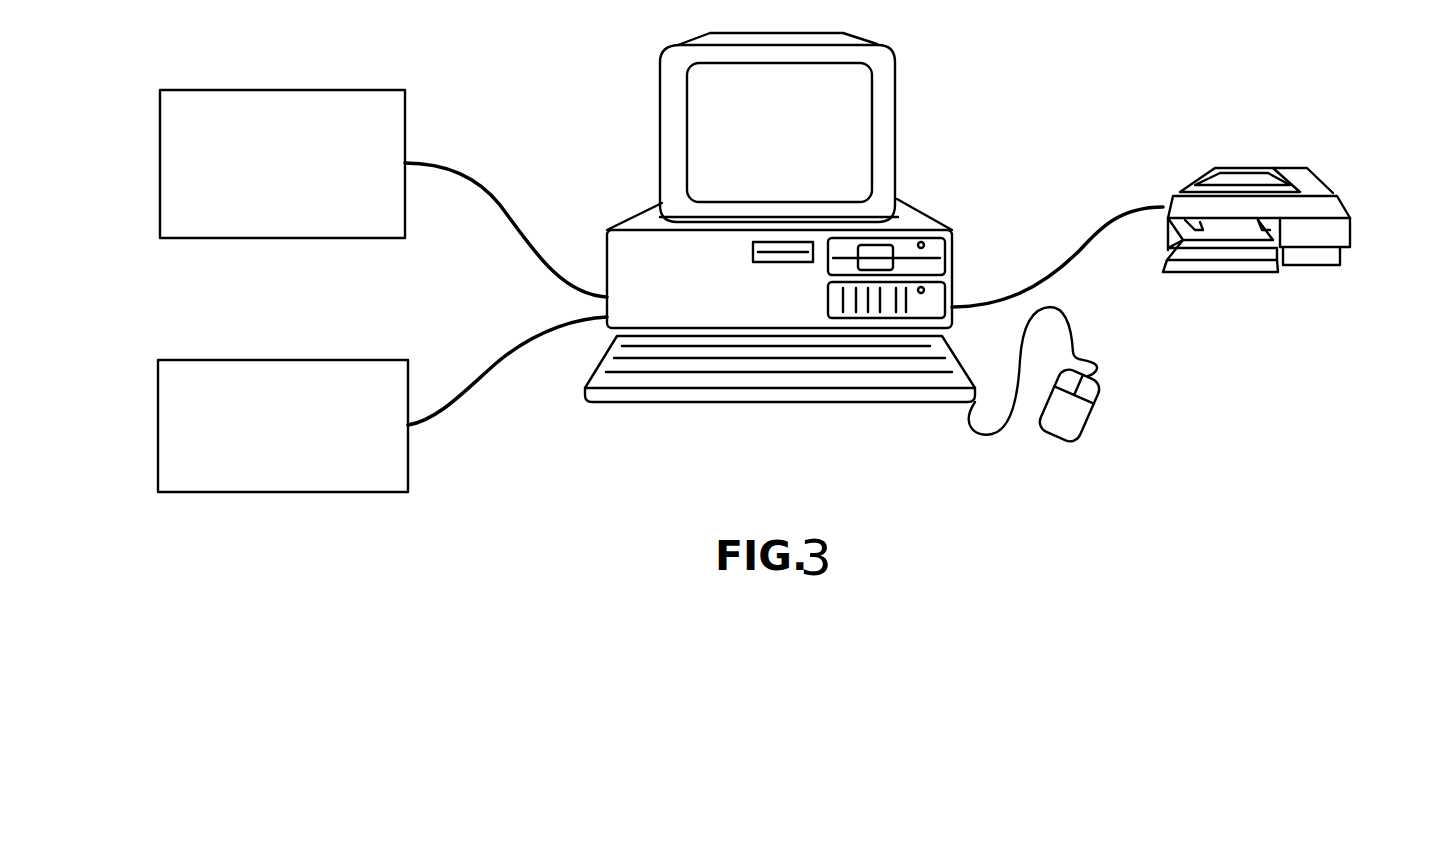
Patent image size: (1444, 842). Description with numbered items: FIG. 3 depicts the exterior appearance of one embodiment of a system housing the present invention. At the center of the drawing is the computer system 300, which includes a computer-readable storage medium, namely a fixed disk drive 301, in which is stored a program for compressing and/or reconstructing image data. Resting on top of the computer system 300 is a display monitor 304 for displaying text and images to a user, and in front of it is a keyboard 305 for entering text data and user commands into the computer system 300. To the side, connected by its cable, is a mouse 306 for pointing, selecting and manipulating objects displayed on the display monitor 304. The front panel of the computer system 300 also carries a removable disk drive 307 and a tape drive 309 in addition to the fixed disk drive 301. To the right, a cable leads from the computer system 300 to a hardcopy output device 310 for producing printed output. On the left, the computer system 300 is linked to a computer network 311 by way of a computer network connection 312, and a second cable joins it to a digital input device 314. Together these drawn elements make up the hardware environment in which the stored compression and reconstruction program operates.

The computer system 300 is at (632, 267).
The fixed disk drive 301 is at (868, 315).
The display monitor 304 is at (672, 93).
The keyboard 305 is at (649, 397).
The mouse 306 is at (1083, 433).
The removable disk drive 307 is at (953, 269).
The tape drive 309 is at (814, 242).
The hardcopy output device 310 is at (1350, 235).
The computer network 311 is at (348, 90).
The computer network connection 312 is at (497, 197).
The digital input device 314 is at (325, 492).